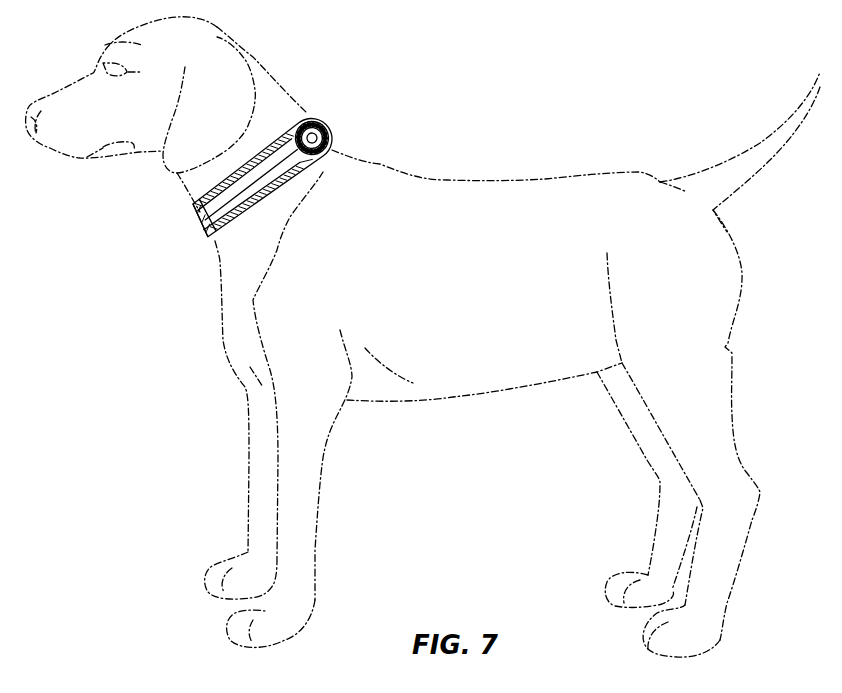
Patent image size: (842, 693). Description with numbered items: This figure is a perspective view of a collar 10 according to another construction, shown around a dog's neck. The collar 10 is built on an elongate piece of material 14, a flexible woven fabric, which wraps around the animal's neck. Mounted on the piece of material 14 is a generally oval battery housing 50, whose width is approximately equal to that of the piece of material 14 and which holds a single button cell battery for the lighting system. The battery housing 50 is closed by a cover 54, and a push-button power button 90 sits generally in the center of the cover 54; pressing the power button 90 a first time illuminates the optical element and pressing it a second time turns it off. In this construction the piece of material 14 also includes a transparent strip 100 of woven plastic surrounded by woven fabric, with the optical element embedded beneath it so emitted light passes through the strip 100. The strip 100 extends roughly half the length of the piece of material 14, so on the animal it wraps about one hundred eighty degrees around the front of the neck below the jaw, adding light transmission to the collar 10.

The collar 10 is at (261, 163).
The piece of material 14 is at (208, 239).
The battery housing 50 is at (332, 133).
The cover 54 is at (323, 123).
The power button 90 is at (325, 152).
The transparent strip 100 is at (199, 226).